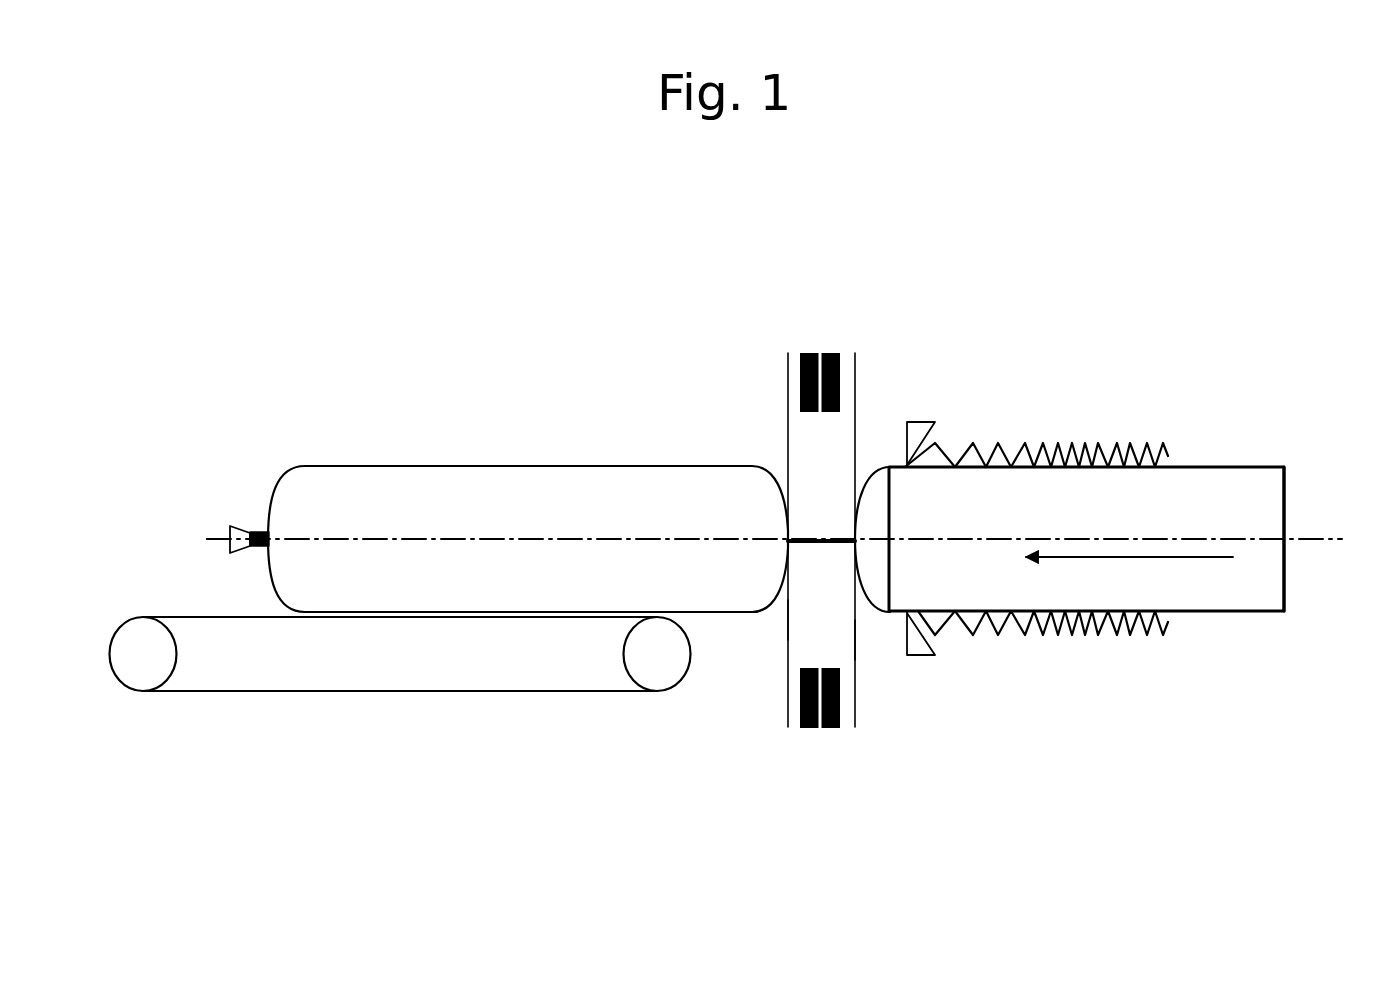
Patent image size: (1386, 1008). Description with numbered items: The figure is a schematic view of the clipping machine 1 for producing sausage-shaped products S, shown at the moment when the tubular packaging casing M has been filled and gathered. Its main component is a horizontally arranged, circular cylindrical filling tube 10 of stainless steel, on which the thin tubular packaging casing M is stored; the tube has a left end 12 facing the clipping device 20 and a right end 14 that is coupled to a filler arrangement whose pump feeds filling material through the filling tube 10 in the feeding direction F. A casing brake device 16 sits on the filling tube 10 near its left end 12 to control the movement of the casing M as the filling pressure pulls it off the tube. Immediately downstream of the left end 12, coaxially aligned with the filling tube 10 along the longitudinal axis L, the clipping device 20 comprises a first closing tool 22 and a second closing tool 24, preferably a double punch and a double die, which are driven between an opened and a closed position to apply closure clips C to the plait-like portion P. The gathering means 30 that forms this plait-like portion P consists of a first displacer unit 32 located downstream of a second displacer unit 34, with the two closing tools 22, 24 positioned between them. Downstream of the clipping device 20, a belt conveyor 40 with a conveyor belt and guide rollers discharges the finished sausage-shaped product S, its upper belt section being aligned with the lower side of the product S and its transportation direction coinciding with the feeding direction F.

The clipping machine 1 is at (1010, 283).
The filling tube 10 is at (1109, 536).
The left end 12 is at (895, 570).
The right end 14 is at (1283, 505).
The casing brake device 16 is at (905, 465).
The clipping device 20 is at (803, 516).
The first closing tool 22 is at (840, 380).
The second closing tool 24 is at (800, 696).
The gathering means 30 is at (893, 731).
The first displacer unit 32 is at (855, 633).
The second displacer unit 34 is at (788, 605).
The belt conveyor 40 is at (488, 716).
The sausage-shaped product S is at (485, 465).
The closure clip C is at (258, 533).
The plait-like portion P is at (824, 537).
The tubular packaging casing M is at (1118, 448).
The feeding direction F is at (1129, 578).
The longitudinal axis L is at (1317, 543).